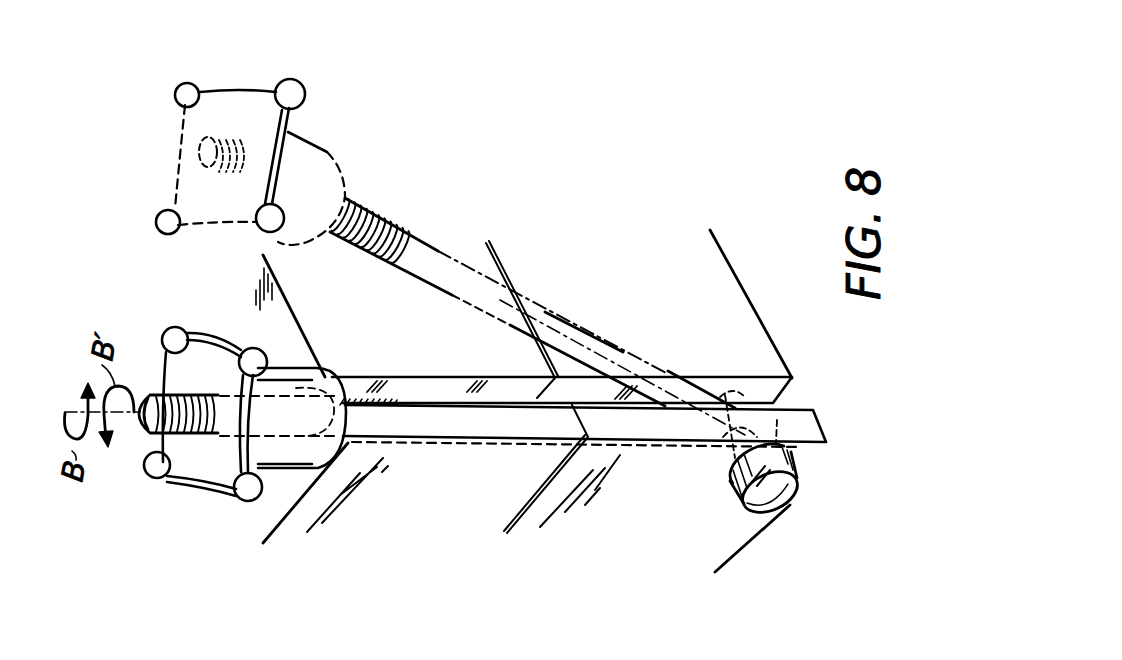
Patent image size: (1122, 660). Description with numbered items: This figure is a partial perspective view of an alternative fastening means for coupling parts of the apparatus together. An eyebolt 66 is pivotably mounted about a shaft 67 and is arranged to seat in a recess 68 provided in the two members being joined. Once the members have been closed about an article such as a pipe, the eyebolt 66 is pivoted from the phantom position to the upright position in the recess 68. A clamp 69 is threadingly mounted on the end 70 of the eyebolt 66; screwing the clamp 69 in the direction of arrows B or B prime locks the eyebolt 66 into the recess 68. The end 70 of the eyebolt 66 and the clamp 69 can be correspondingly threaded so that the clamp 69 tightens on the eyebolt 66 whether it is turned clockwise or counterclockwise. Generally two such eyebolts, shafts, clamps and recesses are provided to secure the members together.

The eyebolt 66 is at (453, 243).
The shaft 67 is at (774, 493).
The recess 68 is at (788, 404).
The clamp 69 is at (238, 92).
The end of eyebolt 70 is at (199, 150).